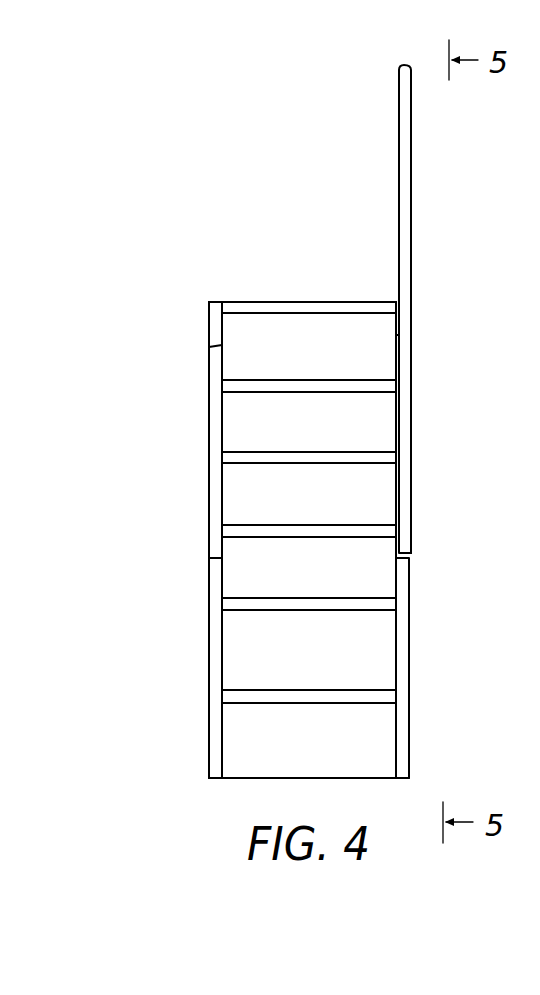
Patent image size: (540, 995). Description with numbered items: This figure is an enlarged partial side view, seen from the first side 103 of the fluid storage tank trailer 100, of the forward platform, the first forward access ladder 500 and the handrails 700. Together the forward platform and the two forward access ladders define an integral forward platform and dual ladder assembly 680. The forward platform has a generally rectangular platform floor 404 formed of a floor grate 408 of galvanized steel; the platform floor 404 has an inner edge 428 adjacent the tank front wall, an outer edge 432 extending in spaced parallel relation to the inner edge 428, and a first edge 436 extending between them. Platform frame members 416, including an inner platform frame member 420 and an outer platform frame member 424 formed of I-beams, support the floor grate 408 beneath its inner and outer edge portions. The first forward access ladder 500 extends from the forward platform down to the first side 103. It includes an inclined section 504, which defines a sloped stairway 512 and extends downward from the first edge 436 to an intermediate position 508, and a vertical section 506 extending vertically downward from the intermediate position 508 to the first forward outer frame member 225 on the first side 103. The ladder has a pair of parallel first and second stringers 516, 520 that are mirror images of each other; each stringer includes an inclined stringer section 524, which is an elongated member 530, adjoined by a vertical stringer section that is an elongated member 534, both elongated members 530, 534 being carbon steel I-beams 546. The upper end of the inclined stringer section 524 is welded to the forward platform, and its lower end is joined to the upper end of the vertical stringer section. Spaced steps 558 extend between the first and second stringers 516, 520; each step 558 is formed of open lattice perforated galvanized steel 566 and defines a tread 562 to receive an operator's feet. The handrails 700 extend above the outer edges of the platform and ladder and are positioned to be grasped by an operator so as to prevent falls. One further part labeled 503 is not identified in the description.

The handrails 700 is at (413, 93).
The integral forward platform and dual ladder assembly 680 is at (210, 258).
The platform floor 404 is at (256, 299).
The floor grate 408 is at (331, 297).
The first edge 436 is at (292, 302).
The outer edge 432 is at (386, 298).
The inner edge 428 is at (205, 302).
The inner platform frame member 420 is at (207, 308).
The sloped stairway 512 is at (200, 365).
The inclined section 504 is at (164, 451).
The first stringer 516 is at (213, 432).
The inclined stringer section 524 is at (171, 450).
The first forward access ladder 500 is at (215, 515).
The intermediate position 508 is at (189, 558).
The vertical section 506 is at (219, 672).
The lower shelf 503 is at (219, 702).
The first side 103 is at (152, 788).
The fluid storage tank trailer 100 is at (177, 838).
The first forward outer frame member 225 is at (242, 781).
The steps 558 is at (272, 383).
The tread 562 is at (268, 443).
The open lattice perforated galvanized steel 566 is at (258, 528).
The platform frame members 416 is at (420, 321).
The outer platform frame member 424 is at (454, 367).
The second stringer 520 is at (420, 380).
The elongated member 530 is at (420, 409).
The carbon steel I-beams 546 is at (420, 607).
The elongated member 534 is at (420, 636).